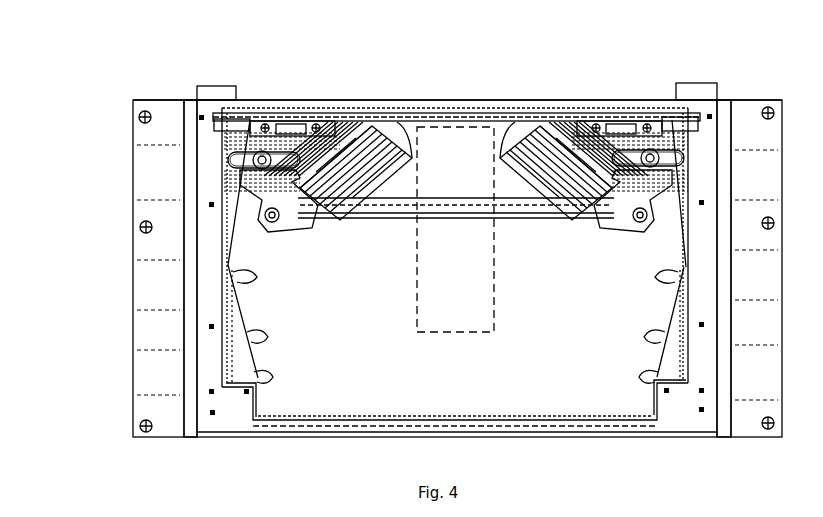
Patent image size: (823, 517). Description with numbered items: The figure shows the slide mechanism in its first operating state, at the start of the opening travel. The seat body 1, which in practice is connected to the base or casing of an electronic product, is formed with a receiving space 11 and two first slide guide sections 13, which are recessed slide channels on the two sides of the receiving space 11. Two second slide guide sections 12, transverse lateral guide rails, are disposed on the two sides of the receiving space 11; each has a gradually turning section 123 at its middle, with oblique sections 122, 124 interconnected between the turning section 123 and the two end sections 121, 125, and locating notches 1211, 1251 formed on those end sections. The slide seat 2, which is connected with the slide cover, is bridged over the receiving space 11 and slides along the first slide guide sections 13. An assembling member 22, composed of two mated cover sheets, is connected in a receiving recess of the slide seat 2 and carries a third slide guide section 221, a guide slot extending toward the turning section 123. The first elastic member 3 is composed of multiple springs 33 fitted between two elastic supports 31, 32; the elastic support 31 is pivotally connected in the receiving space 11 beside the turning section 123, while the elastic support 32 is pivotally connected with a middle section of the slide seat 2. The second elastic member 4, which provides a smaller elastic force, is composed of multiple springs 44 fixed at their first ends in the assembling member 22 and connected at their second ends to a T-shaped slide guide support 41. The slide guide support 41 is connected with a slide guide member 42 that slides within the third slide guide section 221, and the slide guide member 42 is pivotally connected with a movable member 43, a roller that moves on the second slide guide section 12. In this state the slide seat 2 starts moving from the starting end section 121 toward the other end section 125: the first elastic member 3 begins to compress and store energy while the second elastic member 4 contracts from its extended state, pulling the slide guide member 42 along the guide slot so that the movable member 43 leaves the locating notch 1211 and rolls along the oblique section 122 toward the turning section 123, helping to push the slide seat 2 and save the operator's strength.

The seat body 1 is at (263, 440).
The receiving space 11 is at (350, 400).
The second slide guide section 12 is at (76, 427).
The end section 121 is at (265, 112).
The locating notch 1211 is at (215, 117).
The oblique section 122 is at (240, 215).
The turning section 123 is at (230, 280).
The oblique section 124 is at (230, 333).
The end section 125 is at (250, 400).
The locating notch 1251 is at (240, 390).
The first slide guide section 13 is at (182, 443).
The slide seat 2 is at (507, 230).
The assembling member 22 is at (320, 122).
The third slide guide section 221 is at (256, 121).
The first elastic member 3 is at (430, 54).
The elastic support 31 is at (350, 124).
The elastic support 32 is at (407, 128).
The spring 33 is at (377, 124).
The second elastic member 4 is at (48, 108).
The T-shaped slide guide support 41 is at (248, 170).
The slide guide member 42 is at (456, 159).
The movable member 43 is at (235, 152).
The spring 44 is at (240, 190).